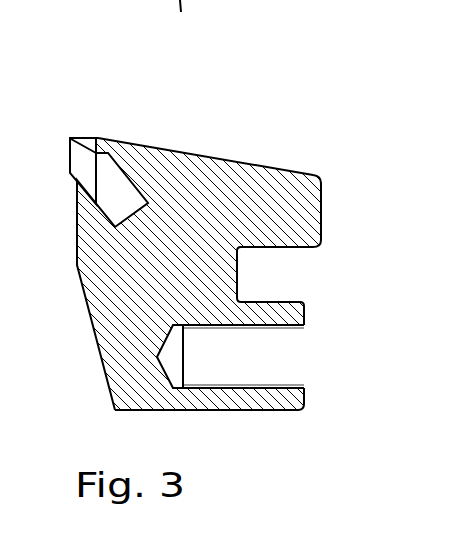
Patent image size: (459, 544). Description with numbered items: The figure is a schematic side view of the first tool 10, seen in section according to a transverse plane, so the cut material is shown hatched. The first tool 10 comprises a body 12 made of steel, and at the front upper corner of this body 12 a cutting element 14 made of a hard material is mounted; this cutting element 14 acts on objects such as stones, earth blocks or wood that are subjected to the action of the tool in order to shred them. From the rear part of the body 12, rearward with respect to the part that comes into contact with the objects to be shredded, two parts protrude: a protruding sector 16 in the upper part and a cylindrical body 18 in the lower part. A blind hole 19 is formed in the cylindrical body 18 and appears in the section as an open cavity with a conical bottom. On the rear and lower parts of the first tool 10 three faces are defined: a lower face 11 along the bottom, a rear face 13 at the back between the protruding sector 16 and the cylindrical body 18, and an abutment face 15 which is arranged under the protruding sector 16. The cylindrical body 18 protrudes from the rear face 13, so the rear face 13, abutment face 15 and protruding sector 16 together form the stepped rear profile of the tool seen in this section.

The first tool 10 is at (229, 247).
The lower face 11 is at (193, 412).
The body 12 is at (157, 272).
The rear face 13 is at (237, 275).
The cutting element 14 is at (83, 158).
The abutment face 15 is at (278, 250).
The protruding sector 16 is at (283, 205).
The cylindrical body 18 is at (276, 312).
The blind hole 19 is at (247, 363).